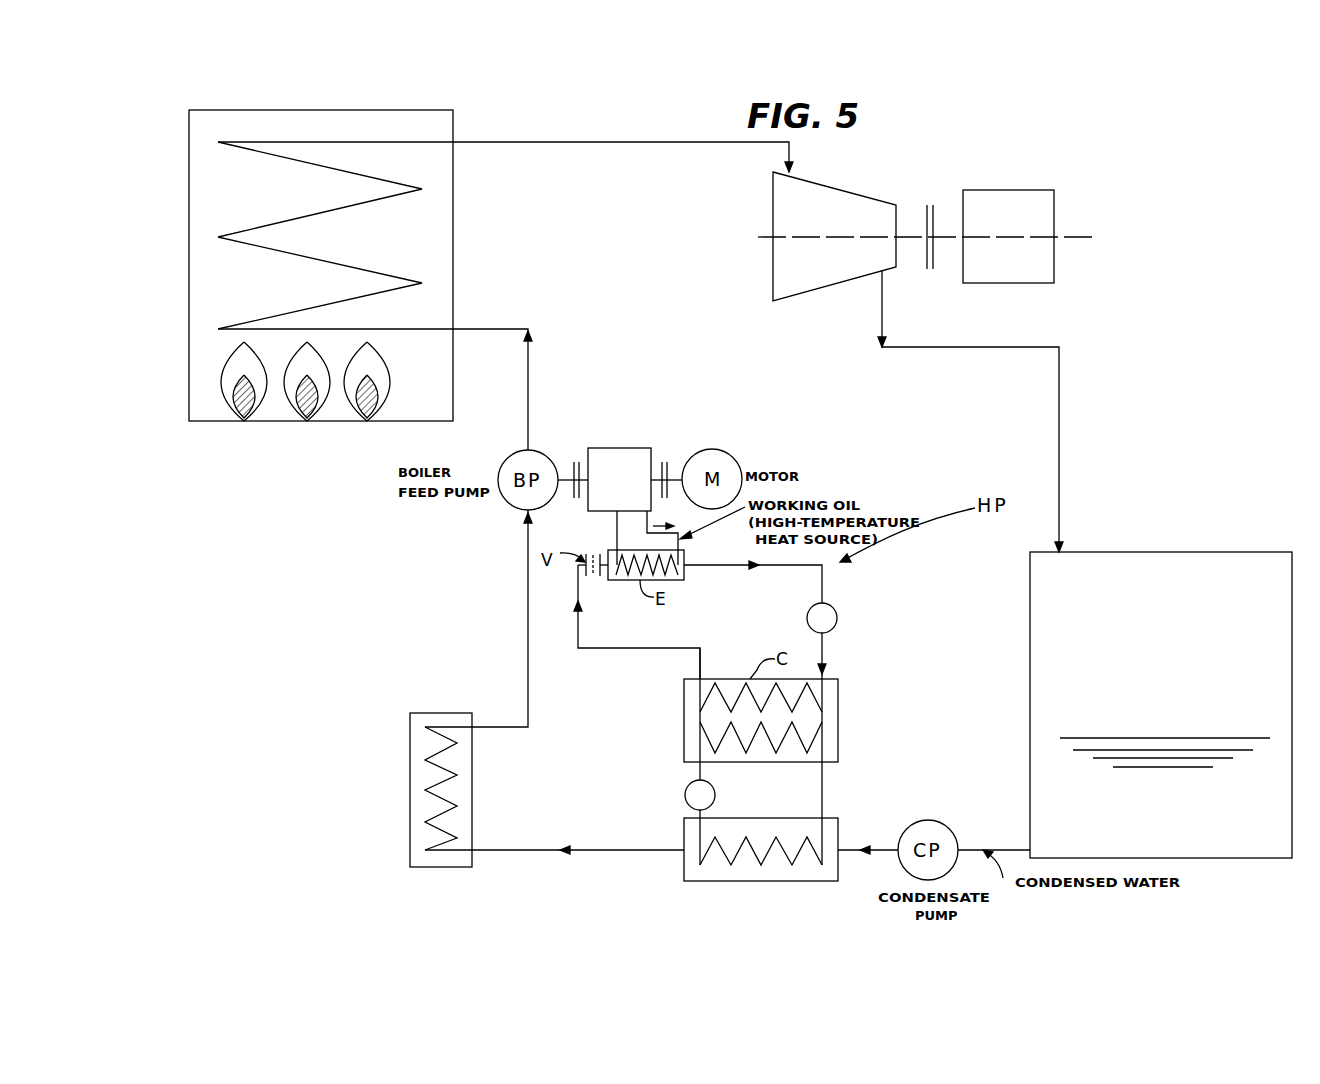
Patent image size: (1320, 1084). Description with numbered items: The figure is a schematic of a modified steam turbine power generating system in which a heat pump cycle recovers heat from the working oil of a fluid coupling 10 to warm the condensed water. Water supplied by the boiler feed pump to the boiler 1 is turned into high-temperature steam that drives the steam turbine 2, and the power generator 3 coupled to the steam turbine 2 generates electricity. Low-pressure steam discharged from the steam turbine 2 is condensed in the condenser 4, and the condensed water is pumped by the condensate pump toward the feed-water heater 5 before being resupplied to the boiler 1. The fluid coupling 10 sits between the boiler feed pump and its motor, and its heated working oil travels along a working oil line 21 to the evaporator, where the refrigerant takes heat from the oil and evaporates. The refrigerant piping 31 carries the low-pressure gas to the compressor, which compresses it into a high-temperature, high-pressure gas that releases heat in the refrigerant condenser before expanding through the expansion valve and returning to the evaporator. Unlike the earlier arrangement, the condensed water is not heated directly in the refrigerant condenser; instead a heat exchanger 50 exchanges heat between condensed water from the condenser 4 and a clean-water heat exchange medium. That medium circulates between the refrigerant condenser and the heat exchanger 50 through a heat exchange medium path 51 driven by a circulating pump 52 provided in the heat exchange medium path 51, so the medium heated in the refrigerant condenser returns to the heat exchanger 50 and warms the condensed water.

The boiler 1 is at (453, 243).
The steam turbine 2 is at (840, 190).
The power generator 3 is at (1015, 190).
The condenser 4 is at (1200, 552).
The feed-water heater 5 is at (410, 779).
The fluid coupling 10 is at (626, 448).
The working oil pipe 21 is at (647, 526).
The heat pump pipe 31 is at (822, 578).
The heat exchanger 50 is at (745, 818).
The heat exchange medium path 51 is at (700, 768).
The circulating pump 52 is at (685, 797).